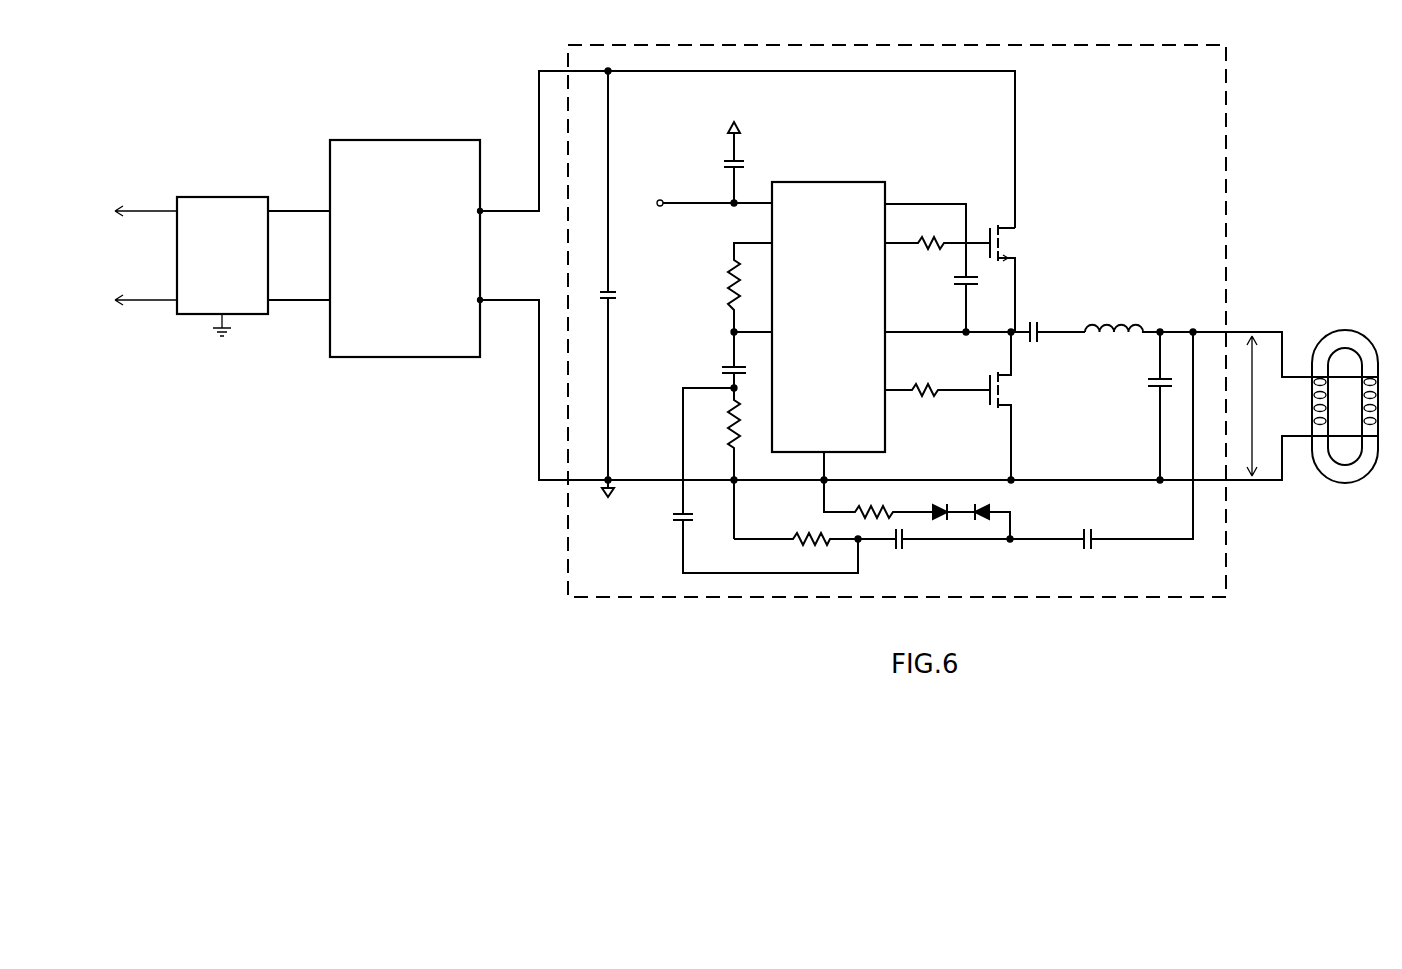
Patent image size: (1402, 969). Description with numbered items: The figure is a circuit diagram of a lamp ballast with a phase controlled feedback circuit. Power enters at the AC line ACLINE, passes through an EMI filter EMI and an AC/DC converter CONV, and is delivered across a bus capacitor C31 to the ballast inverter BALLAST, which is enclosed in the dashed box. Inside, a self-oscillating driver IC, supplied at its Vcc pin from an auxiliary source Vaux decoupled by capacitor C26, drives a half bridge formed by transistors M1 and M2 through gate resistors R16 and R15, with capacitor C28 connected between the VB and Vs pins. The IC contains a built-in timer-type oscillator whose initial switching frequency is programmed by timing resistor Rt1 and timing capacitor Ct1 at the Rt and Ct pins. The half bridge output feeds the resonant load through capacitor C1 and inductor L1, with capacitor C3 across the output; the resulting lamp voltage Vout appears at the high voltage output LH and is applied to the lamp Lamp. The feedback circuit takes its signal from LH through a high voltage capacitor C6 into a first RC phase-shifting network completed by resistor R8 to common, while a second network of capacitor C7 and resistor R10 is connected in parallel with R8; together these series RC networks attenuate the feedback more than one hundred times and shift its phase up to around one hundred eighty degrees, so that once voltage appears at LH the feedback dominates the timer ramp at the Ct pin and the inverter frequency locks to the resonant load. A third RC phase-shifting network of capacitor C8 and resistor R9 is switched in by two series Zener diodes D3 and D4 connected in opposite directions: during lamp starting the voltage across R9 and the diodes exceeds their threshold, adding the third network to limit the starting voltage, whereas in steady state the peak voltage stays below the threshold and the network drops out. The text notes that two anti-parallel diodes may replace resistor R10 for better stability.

The AC line input ACLINE is at (138, 255).
The EMI filter EMI is at (222, 266).
The AC/DC converter CONV is at (405, 248).
The ballast inverter BALLAST is at (1083, 116).
The DC bus capacitor C31 is at (596, 282).
The capacitor C26 is at (745, 171).
The auxiliary supply voltage input Vaux is at (701, 191).
The self-oscillating driver IC is at (833, 182).
The timing resistor Rt1 is at (728, 306).
The timing capacitor Ct1 is at (722, 366).
The resistor R10 is at (717, 463).
The capacitor C7 is at (744, 480).
The resistor R8 is at (815, 524).
The capacitor C8 is at (985, 554).
The capacitor C6 is at (1136, 455).
The resistor R9 is at (868, 496).
The Zener diode D3 is at (936, 524).
The Zener diode D4 is at (978, 524).
The capacitor C28 is at (931, 269).
The resistor R16 is at (937, 263).
The transistor M1 is at (1021, 276).
The resistor R15 is at (937, 377).
The transistor M2 is at (1019, 407).
The DC blocking capacitor C1 is at (1057, 322).
The resonant inductor L1 is at (1199, 338).
The high voltage output LH is at (1190, 312).
The resonant capacitor C3 is at (1145, 407).
The output voltage Vout is at (1241, 406).
The lamp Lamp is at (1345, 391).